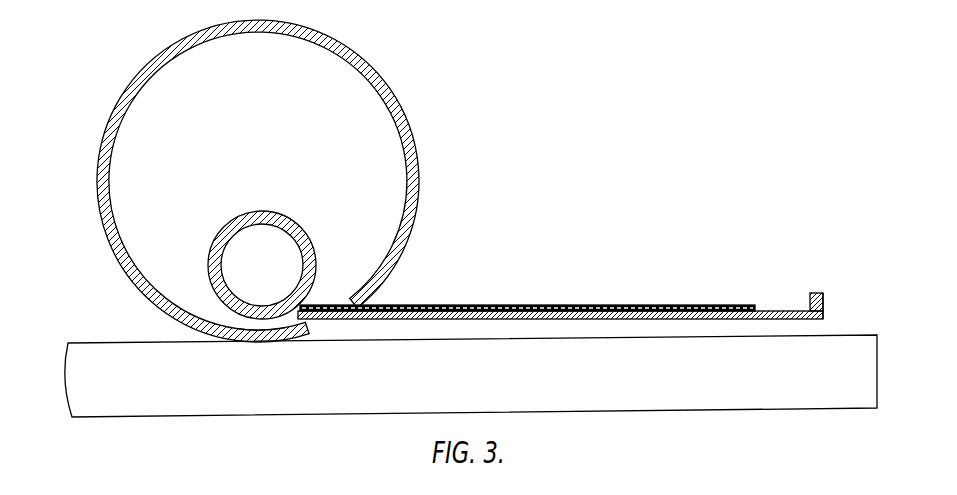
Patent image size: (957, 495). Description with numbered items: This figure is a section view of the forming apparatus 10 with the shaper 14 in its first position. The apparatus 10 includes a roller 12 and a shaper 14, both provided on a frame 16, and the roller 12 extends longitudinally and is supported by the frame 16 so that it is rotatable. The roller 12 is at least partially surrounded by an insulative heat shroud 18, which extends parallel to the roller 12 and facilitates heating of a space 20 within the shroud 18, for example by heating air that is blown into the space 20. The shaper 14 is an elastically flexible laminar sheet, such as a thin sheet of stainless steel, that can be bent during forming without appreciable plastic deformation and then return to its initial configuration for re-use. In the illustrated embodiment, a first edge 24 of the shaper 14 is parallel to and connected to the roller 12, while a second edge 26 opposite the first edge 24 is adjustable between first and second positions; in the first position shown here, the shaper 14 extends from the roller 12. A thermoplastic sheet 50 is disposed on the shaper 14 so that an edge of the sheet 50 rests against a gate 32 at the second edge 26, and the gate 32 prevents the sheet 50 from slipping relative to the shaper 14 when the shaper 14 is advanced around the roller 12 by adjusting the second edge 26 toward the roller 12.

The forming apparatus 10 is at (618, 120).
The roller 12 is at (288, 213).
The shaper 14 is at (777, 316).
The frame 16 is at (98, 341).
The insulative heat shroud 18 is at (167, 50).
The space 20 is at (300, 115).
The first edge 24 is at (270, 320).
The second edge 26 is at (825, 300).
The gate 32 is at (813, 295).
The thermoplastic sheet 50 is at (582, 310).